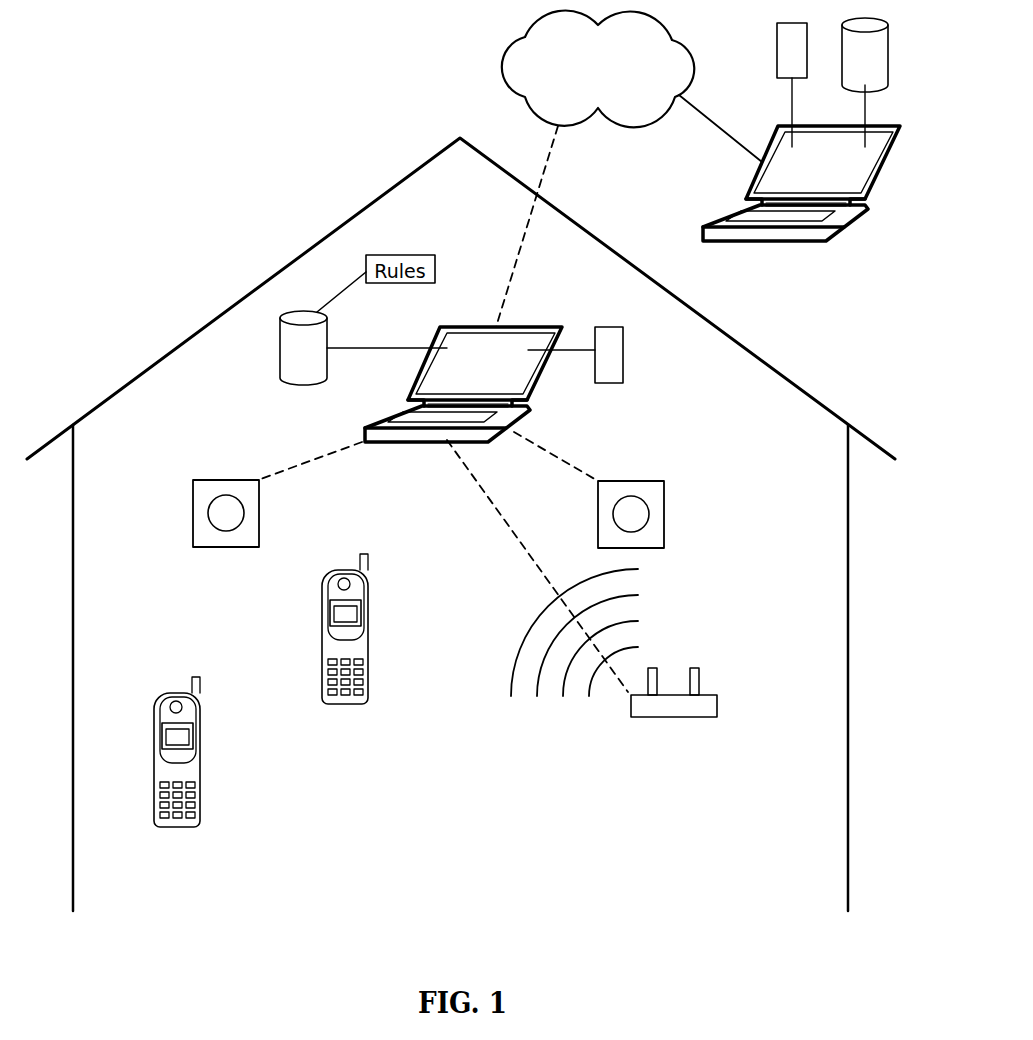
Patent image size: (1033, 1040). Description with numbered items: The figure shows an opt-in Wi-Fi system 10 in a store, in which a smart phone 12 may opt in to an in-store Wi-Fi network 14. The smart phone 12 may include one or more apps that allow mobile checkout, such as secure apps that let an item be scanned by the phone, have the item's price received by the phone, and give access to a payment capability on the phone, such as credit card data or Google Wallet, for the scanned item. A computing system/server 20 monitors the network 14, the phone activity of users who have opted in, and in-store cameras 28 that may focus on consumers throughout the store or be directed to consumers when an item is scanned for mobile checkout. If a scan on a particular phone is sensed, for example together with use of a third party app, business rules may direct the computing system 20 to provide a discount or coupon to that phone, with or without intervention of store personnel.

The opt-in Wi-Fi system 10 is at (663, 374).
The smart phone 12 is at (200, 812).
The in-store Wi-Fi network 14 is at (717, 710).
The computing system/server 20 is at (462, 370).
The camera 28 is at (259, 523).